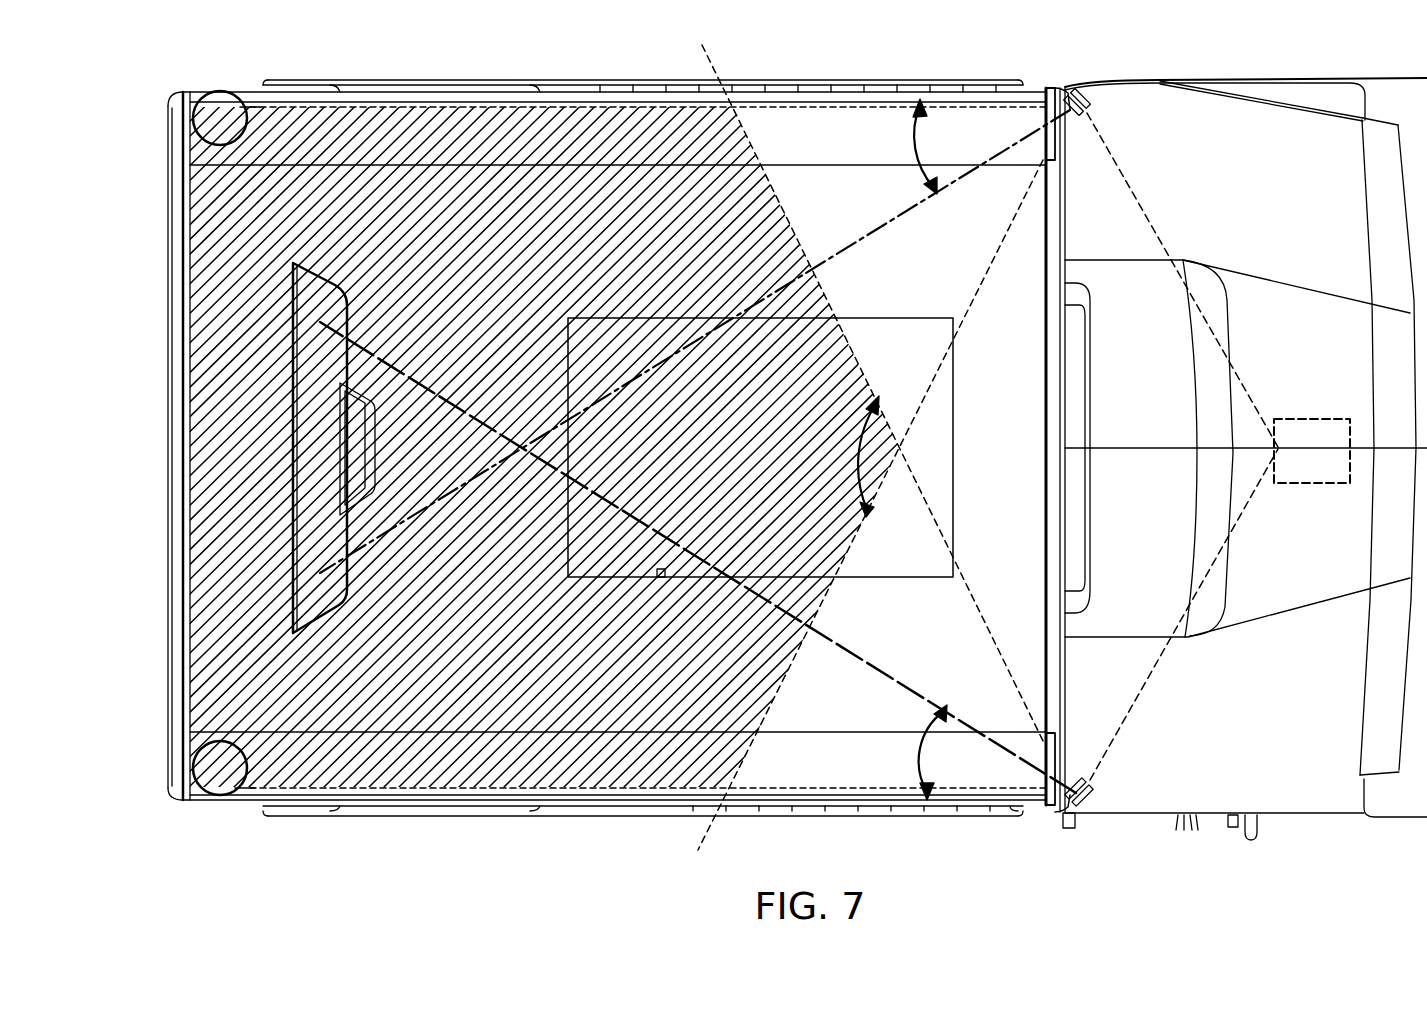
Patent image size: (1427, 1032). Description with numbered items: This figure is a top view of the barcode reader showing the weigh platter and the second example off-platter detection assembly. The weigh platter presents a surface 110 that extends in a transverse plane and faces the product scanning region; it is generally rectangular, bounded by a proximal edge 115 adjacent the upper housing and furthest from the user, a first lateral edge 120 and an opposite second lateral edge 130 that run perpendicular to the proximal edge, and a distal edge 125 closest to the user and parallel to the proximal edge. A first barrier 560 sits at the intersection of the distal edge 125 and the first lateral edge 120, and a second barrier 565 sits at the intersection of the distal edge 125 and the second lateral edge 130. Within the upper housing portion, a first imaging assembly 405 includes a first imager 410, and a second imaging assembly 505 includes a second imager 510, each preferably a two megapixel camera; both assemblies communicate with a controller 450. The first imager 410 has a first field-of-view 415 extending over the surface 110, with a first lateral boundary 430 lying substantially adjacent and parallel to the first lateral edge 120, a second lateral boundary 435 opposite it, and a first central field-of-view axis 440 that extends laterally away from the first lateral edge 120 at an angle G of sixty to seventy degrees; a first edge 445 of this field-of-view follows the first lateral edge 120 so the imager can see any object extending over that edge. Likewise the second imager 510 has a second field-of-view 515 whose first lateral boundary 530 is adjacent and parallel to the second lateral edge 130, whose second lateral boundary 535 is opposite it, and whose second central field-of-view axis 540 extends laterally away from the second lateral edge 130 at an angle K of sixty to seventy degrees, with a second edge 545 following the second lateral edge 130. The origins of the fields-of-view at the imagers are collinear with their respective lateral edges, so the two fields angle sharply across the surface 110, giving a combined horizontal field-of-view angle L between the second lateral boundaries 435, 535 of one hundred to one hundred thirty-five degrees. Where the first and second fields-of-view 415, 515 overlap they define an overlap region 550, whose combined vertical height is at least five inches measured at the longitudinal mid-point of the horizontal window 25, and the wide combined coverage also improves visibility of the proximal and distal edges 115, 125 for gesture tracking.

The horizontal window 25 is at (582, 352).
The surface 110 is at (398, 226).
The proximal edge 115 is at (1043, 386).
The first lateral edge 120 is at (450, 812).
The distal edge 125 is at (178, 368).
The second lateral edge 130 is at (495, 86).
The first imaging assembly 405 is at (1088, 811).
The first imager 410 is at (1092, 790).
The first field-of-view 415 is at (992, 760).
The first lateral boundary 430 is at (798, 785).
The second lateral boundary 435 is at (938, 528).
The first central field-of-view axis 440 is at (870, 662).
The first edge 445 is at (243, 791).
The controller 450 is at (1310, 418).
The second imaging assembly 505 is at (1093, 100).
The second imager 510 is at (1088, 118).
The second field-of-view 515 is at (957, 137).
The first lateral boundary 530 is at (800, 110).
The second lateral boundary 535 is at (943, 362).
The second central field-of-view axis 540 is at (905, 215).
The second edge 545 is at (251, 98).
The overlap region 550 is at (228, 300).
The first barrier 560 is at (215, 775).
The second barrier 565 is at (215, 130).
The angle K is at (913, 150).
The combined horizontal field-of-view angle L is at (858, 456).
The angle G is at (921, 760).